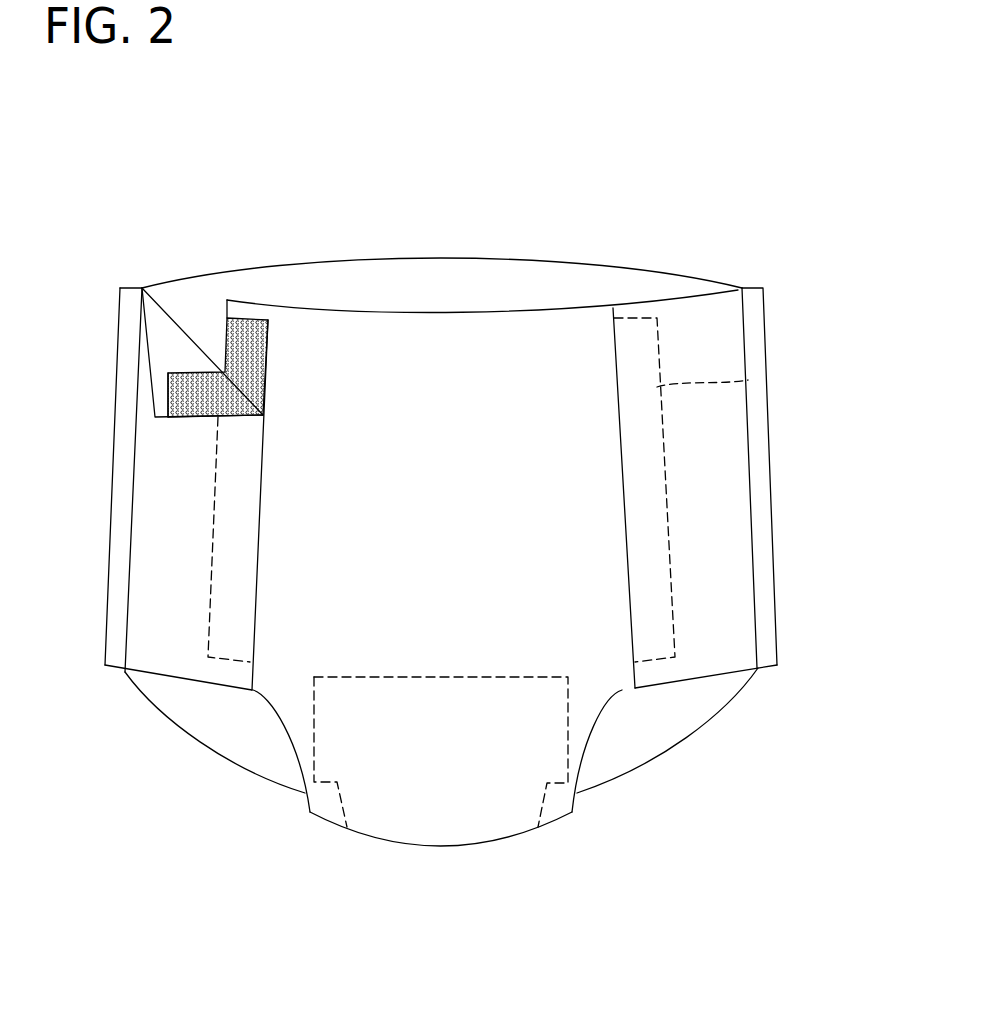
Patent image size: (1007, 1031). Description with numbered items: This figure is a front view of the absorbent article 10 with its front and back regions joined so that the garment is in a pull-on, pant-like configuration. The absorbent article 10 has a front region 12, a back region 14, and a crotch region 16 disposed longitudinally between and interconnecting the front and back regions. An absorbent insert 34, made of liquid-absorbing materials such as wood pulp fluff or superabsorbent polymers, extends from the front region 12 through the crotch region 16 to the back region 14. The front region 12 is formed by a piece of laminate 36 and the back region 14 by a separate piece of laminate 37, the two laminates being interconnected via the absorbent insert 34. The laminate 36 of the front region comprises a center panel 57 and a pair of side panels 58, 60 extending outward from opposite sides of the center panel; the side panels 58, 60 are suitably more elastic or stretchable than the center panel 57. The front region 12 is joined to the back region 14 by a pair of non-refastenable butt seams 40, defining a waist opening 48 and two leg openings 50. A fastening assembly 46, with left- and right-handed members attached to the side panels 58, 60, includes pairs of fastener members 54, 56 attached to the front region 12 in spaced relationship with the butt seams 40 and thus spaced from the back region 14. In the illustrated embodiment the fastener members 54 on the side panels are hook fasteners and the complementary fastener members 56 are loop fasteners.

The absorbent article 10 is at (650, 142).
The front region 12 is at (392, 383).
The back region 14 is at (433, 298).
The crotch region 16 is at (383, 848).
The absorbent insert 34 is at (500, 777).
The laminate 36 is at (535, 375).
The laminate 37 is at (393, 280).
The non-refastenable butt seams 40 is at (120, 517).
The fastening assembly 46 is at (220, 547).
The waist opening 48 is at (528, 258).
The leg openings 50 is at (218, 757).
The fastener member 54 is at (172, 388).
The fastener member 56 is at (227, 322).
The center panel 57 is at (458, 486).
The side panel 58 is at (720, 655).
The side panel 60 is at (142, 357).